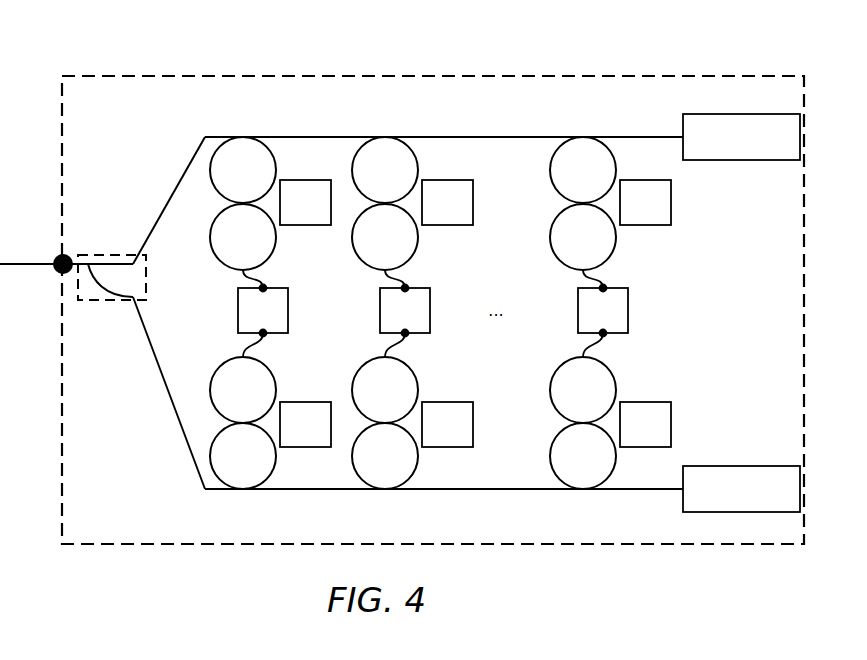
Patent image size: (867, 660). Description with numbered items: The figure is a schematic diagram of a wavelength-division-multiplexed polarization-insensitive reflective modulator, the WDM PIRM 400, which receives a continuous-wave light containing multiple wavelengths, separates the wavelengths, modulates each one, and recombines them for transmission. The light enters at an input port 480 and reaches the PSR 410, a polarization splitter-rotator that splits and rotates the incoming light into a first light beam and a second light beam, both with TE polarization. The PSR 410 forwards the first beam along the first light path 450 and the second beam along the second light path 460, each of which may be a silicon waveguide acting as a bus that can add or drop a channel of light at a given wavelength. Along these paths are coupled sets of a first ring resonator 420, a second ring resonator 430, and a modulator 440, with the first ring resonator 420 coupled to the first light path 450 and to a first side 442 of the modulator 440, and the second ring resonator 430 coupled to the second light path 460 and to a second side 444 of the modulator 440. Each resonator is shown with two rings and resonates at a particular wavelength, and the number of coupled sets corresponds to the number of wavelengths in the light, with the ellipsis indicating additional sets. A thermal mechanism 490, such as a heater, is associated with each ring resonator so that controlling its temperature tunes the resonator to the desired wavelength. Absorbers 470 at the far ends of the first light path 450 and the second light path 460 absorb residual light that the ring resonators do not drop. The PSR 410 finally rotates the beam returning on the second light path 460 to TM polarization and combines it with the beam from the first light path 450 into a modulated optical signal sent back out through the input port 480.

The WDM PIRM 400 is at (170, 77).
The PSR 410 is at (98, 254).
The first ring resonator 420 is at (274, 164).
The second ring resonator 430 is at (274, 462).
The modulator 440 is at (433, 310).
The first side of the modulator 442 is at (264, 285).
The second side of the modulator 444 is at (265, 336).
The first light path 450 is at (483, 137).
The second light path 460 is at (483, 489).
The absorber 470 is at (741, 313).
The input port 480 is at (56, 270).
The thermal mechanism 490 is at (475, 313).